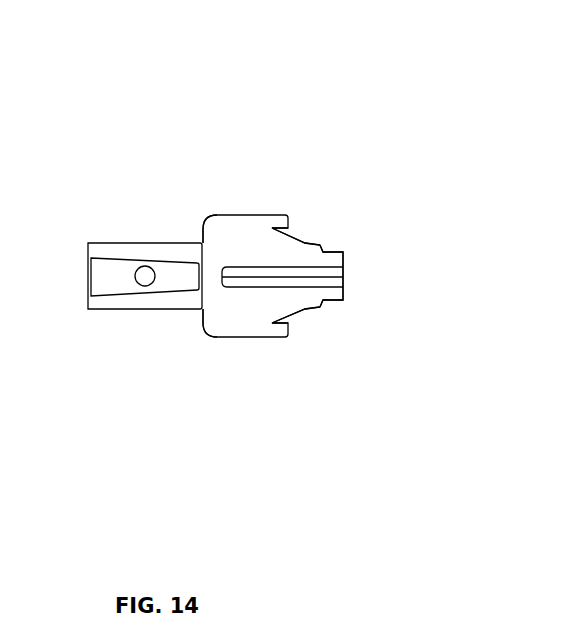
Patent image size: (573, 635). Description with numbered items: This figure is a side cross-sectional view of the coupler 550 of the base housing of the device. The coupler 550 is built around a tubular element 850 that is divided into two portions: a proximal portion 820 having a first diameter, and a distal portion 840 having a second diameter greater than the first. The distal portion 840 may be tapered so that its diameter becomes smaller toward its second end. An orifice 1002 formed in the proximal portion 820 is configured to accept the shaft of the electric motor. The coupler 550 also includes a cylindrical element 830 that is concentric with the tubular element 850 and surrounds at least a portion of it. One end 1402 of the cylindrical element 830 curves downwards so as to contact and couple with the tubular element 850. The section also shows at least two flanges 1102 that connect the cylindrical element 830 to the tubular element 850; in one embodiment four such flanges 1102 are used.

The coupler 550 is at (198, 160).
The distal portion 840 is at (130, 243).
The tubular element 850 is at (140, 307).
The cylindrical element 830 is at (245, 338).
The proximal portion 820 is at (337, 252).
The flange 1102 is at (305, 243).
The end of the cylindrical element 1402 is at (203, 233).
The orifice 1002 is at (338, 279).